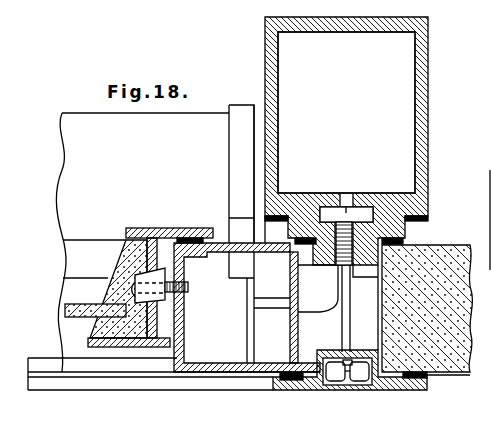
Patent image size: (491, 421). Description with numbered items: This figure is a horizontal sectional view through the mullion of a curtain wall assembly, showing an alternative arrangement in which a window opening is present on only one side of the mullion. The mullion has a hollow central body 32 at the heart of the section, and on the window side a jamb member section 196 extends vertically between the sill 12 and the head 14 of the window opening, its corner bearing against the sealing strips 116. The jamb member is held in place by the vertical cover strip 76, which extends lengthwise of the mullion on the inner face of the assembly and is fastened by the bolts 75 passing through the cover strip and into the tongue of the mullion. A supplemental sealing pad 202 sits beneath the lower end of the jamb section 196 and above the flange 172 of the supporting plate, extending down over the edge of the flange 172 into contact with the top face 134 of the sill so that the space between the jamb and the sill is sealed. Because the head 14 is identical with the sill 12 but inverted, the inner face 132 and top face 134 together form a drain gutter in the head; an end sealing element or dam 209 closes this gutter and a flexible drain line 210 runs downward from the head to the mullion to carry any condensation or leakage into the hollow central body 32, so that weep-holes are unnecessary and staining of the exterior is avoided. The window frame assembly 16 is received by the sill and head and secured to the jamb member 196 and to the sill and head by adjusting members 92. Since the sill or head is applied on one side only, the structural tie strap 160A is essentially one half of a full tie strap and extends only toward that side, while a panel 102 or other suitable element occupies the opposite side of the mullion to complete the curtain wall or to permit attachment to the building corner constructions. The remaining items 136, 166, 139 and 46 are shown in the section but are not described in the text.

The sill 12 is at (88, 128).
The panel edge 136 is at (82, 173).
The top face of the sill 134 is at (91, 252).
The head 14 is at (62, 327).
The window frame assembly 16 is at (163, 228).
The adjusting member 92 is at (157, 299).
The flange of the supporting plate 172 is at (238, 150).
The flange gap 166 is at (260, 115).
The housing 139 is at (265, 40).
The hollow central body of the mullion 32 is at (387, 87).
The seal 46 is at (413, 236).
The sealing strip 116 is at (290, 245).
The supplemental sealing pad 202 is at (240, 266).
The end sealing element or dam 209 is at (253, 327).
The flexible drain line 210 is at (278, 302).
The structural tie strap 160A is at (338, 307).
The bolt 75 is at (342, 332).
The panel 102 is at (443, 357).
The vertical cover strip 76 is at (284, 386).
The inner face of the sill 132 is at (133, 366).
The jamb member section 196 is at (233, 373).